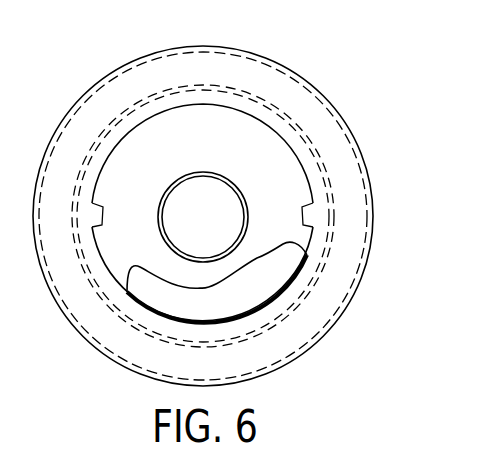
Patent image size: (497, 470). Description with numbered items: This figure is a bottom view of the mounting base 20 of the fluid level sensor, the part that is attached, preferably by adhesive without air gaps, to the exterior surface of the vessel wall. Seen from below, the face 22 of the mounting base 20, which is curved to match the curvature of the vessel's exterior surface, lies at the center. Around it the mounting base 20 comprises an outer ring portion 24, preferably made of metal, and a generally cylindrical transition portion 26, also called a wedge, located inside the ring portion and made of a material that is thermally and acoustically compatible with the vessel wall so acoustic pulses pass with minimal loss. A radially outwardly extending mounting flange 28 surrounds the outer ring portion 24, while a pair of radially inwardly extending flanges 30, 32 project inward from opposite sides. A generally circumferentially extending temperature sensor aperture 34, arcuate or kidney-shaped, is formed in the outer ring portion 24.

The mounting base 20 is at (152, 55).
The face 22 is at (165, 170).
The outer ring portion 24 is at (220, 120).
The transition portion 26 is at (217, 192).
The mounting flange 28 is at (357, 256).
The radially inwardly extending flange 30 is at (302, 212).
The radially inwardly extending flange 32 is at (106, 212).
The temperature sensor aperture 34 is at (143, 287).